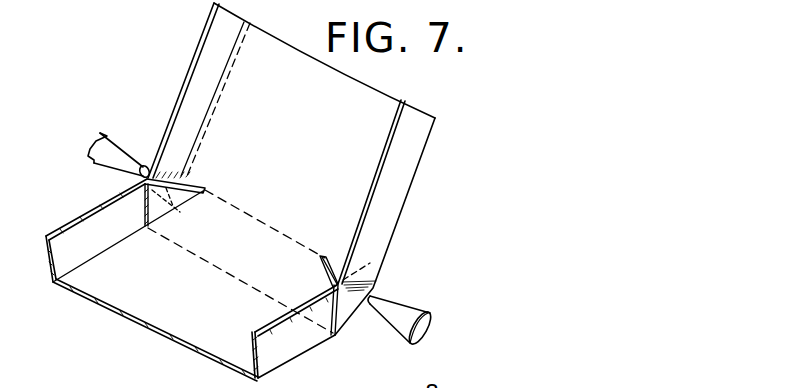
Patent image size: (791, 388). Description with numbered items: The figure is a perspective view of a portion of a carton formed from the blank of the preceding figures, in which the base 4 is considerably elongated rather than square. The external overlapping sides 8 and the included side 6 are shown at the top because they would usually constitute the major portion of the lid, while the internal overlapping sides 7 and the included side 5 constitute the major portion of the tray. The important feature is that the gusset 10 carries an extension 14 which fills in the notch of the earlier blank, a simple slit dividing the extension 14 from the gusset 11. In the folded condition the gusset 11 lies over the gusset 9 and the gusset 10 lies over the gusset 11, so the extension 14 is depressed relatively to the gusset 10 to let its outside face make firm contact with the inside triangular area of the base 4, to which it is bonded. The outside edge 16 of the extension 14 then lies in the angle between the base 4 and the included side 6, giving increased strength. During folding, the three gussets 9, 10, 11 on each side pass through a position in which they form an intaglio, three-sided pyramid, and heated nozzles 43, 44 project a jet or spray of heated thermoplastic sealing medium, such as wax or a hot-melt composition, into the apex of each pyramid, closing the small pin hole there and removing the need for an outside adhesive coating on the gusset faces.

The base 4 is at (240, 237).
The included side 5 is at (215, 323).
The included side 6 is at (309, 115).
The internal overlapping side 7 is at (90, 232).
The external overlapping side 8 is at (403, 150).
The gusset 9 is at (340, 308).
The gusset 10 is at (148, 226).
The gusset 11 is at (160, 176).
The extension 14 is at (325, 273).
The outside edge 16 is at (205, 187).
The heated nozzle 43 is at (400, 300).
The heated nozzle 44 is at (123, 143).